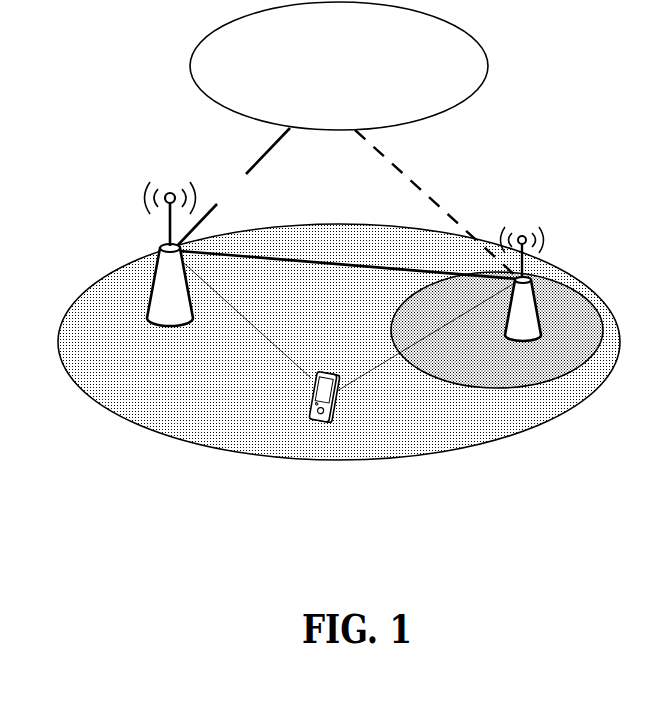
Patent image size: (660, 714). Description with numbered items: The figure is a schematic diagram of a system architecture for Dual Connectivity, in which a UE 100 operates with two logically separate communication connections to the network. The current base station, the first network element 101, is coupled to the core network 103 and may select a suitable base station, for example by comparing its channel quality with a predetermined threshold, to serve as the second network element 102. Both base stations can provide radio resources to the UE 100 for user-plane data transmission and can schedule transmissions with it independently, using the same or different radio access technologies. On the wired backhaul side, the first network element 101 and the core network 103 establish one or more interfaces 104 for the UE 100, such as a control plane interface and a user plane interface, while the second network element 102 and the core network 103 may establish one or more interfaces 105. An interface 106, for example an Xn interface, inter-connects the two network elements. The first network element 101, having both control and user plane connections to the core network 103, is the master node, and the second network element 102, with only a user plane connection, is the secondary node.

The UE 100 is at (325, 417).
The first network element 101 is at (170, 272).
The second network element 102 is at (522, 302).
The core network 103 is at (339, 66).
The interfaces 104 is at (233, 187).
The interfaces 105 is at (436, 203).
The interface 106 is at (349, 266).